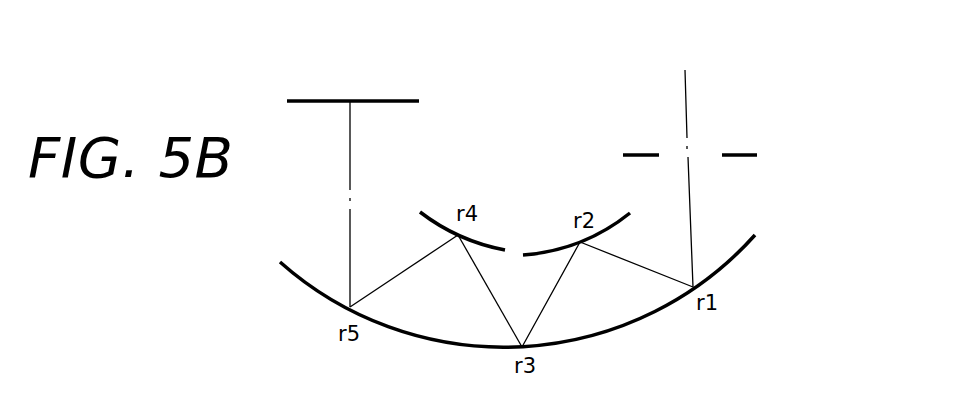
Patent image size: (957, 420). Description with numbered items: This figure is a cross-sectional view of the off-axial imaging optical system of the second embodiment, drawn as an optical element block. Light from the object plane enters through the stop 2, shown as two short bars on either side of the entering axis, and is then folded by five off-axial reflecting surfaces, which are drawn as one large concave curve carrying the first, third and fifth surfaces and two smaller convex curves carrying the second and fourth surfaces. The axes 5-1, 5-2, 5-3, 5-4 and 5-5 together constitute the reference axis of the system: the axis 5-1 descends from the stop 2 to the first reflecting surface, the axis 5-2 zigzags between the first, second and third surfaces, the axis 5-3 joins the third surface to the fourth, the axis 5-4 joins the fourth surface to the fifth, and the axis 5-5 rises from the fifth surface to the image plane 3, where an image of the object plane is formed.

The stop 2 is at (740, 153).
The image plane 3 is at (398, 101).
The axis 5-1 is at (694, 250).
The axis 5-2 is at (608, 255).
The axis 5-3 is at (478, 268).
The axis 5-4 is at (408, 270).
The axis 5-5 is at (351, 145).